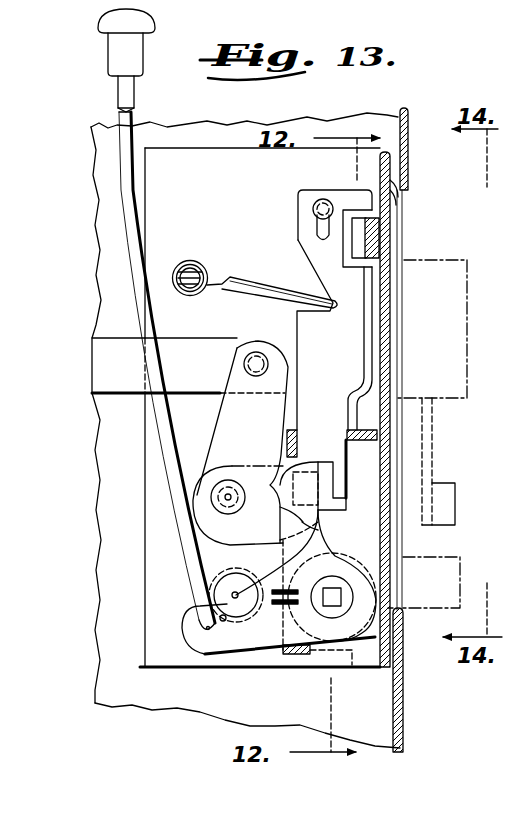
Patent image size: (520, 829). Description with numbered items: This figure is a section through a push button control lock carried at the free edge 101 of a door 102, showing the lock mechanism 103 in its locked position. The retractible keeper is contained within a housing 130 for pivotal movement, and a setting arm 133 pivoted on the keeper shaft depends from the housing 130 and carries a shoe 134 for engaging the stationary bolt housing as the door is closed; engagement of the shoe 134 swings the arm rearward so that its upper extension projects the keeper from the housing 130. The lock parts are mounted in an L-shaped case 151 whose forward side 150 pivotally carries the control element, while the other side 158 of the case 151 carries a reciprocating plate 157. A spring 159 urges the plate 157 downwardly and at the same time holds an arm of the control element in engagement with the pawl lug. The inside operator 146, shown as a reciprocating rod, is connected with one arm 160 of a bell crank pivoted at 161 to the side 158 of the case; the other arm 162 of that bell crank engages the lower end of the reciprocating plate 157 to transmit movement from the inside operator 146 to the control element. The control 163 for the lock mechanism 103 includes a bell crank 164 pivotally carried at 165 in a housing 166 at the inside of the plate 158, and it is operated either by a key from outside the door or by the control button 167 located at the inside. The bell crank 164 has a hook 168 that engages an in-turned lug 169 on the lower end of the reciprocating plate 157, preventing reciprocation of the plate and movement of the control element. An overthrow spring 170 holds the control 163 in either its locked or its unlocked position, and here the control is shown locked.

The free edge 101 is at (405, 723).
The door 102 is at (409, 703).
The lock mechanism 103 is at (262, 222).
The housing 130 is at (437, 261).
The setting arm 133 is at (428, 437).
The shoe 134 is at (447, 504).
The inside operator 146 is at (112, 372).
The forward side 150 is at (389, 168).
The L-shaped case 151 is at (146, 172).
The reciprocating plate 157 is at (322, 250).
The other side 158 is at (155, 187).
The spring 159 is at (278, 292).
The arm 160 is at (236, 423).
The pivot 161 is at (215, 497).
The arm 162 is at (328, 538).
The control 163 is at (238, 659).
The bell crank 164 is at (268, 633).
The pivot 165 is at (340, 607).
The housing 166 is at (352, 650).
The control button 167 is at (115, 52).
The hook 168 is at (333, 480).
The in-turned lug 169 is at (345, 503).
The overthrow spring 170 is at (235, 594).